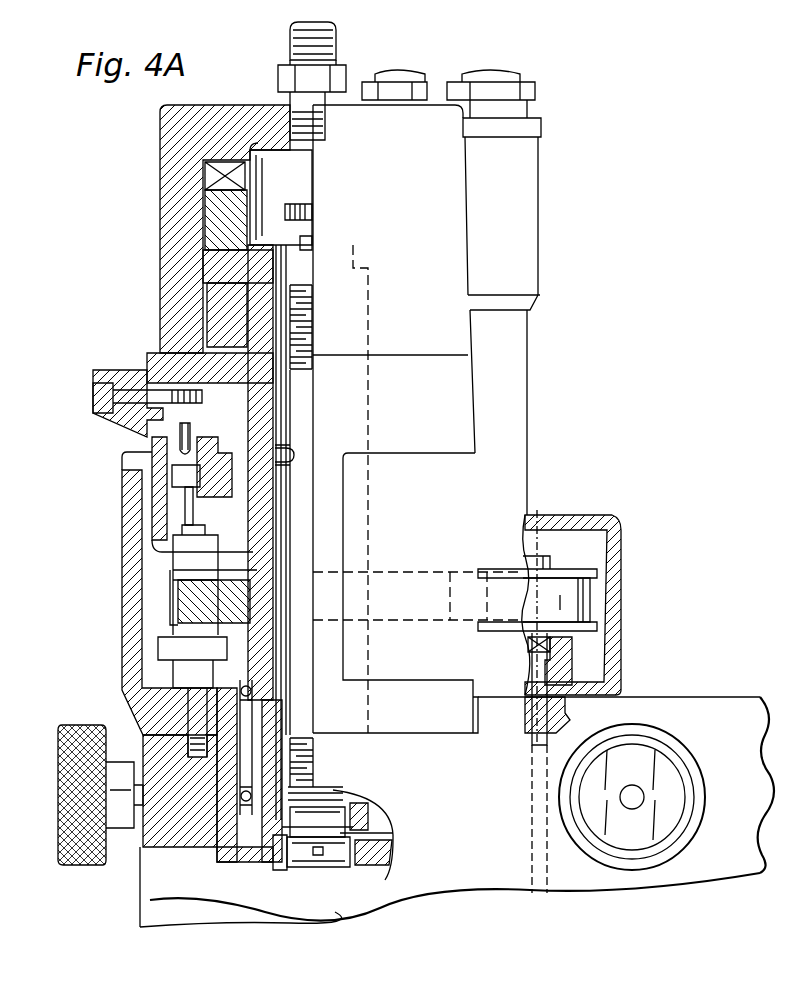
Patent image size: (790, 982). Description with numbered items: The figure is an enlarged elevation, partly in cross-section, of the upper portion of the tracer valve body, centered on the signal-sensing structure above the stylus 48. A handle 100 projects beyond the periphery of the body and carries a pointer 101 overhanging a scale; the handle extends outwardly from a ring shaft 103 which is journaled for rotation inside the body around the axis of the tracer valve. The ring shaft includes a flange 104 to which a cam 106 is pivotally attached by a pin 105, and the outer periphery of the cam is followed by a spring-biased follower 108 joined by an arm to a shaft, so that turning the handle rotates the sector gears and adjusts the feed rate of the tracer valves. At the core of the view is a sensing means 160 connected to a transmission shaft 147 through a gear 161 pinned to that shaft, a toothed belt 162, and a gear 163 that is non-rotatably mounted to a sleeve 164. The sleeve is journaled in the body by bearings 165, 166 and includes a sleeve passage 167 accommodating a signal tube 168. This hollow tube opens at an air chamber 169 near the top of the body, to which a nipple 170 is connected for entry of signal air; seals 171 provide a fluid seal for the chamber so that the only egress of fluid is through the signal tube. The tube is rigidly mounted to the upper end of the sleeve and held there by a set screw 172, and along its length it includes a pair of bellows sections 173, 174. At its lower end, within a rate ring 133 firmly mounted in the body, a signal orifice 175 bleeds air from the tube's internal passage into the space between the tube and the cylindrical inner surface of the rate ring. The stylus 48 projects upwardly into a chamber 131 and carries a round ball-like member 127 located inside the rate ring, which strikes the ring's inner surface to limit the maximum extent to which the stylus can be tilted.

The stylus 48 is at (290, 865).
The handle 100 is at (441, 492).
The pointer 101 is at (92, 377).
The ring shaft 103 is at (172, 432).
The flange 104 is at (208, 510).
The pin 105 is at (262, 437).
The cam 106 is at (215, 458).
The follower 108 is at (225, 482).
The ball-like member 127 is at (303, 865).
The chamber 131 is at (214, 889).
The rate ring 133 is at (330, 858).
The transmission shaft 147 is at (525, 737).
The sensing means 160 is at (232, 355).
The gear 161 is at (558, 575).
The toothed belt 162 is at (592, 604).
The gear 163 is at (190, 572).
The sleeve 164 is at (250, 553).
The bearing 165 is at (250, 690).
The bearing 166 is at (235, 803).
The sleeve passage 167 is at (205, 470).
The signal tube 168 is at (314, 429).
The air chamber 169 is at (298, 184).
The nipple 170 is at (338, 45).
The seal 171 is at (210, 205).
The set screw 172 is at (316, 212).
The bellows section 173 is at (298, 331).
The bellows section 174 is at (302, 790).
The signal orifice 175 is at (318, 858).